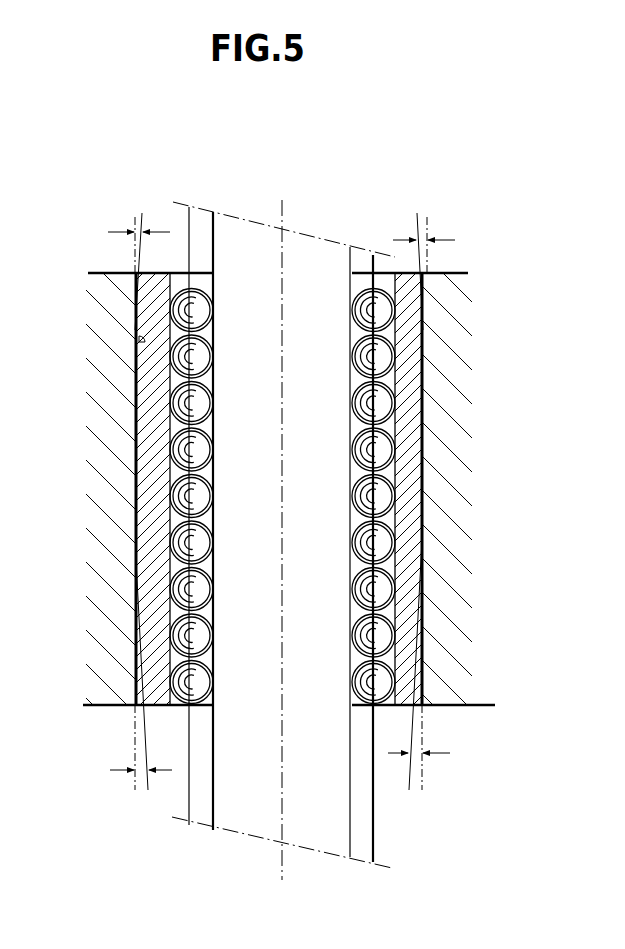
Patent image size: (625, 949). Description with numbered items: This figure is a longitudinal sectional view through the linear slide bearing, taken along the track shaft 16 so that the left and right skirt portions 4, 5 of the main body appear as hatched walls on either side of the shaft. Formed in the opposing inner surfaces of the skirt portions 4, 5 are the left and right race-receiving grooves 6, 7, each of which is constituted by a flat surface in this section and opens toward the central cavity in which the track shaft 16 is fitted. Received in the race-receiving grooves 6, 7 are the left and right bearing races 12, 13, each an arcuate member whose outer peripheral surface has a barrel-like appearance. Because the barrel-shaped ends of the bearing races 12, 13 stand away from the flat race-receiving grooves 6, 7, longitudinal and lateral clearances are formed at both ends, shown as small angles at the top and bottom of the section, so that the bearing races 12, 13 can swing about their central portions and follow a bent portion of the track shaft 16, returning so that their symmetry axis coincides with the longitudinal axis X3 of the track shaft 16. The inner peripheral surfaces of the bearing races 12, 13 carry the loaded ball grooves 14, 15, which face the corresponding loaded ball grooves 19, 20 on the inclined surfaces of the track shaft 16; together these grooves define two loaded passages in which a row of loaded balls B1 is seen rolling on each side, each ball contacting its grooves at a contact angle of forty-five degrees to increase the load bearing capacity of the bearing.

The left skirt portion 4 is at (100, 545).
The right skirt portion 5 is at (460, 545).
The left race-receiving groove 6 is at (135, 352).
The right race-receiving groove 7 is at (422, 347).
The left bearing race 12 is at (148, 455).
The right bearing race 13 is at (419, 469).
The loaded ball groove 14 is at (176, 397).
The loaded ball groove 15 is at (376, 401).
The track shaft 16 is at (260, 805).
The loaded ball groove 19 is at (203, 812).
The loaded ball groove 20 is at (367, 819).
The loaded balls B1 is at (185, 591).
The longitudinal axis of the track shaft X3 is at (283, 546).